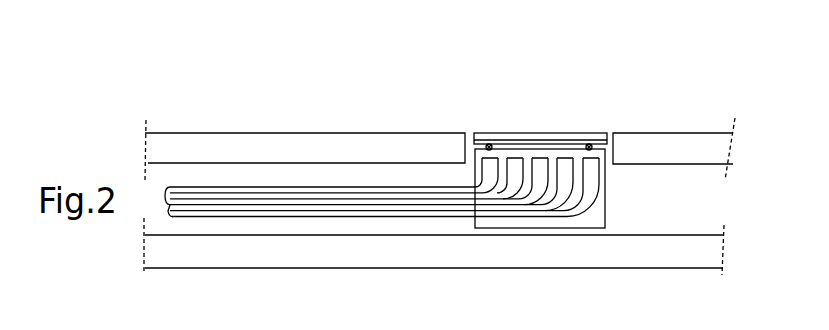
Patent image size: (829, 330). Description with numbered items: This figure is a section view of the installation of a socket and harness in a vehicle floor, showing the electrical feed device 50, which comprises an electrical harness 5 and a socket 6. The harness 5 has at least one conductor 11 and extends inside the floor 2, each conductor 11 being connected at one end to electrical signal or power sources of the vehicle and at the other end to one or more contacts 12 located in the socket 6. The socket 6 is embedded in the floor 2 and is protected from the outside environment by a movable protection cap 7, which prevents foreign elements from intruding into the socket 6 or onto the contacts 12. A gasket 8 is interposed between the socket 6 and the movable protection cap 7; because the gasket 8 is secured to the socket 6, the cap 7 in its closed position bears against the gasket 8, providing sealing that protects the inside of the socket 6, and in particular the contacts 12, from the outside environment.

The floor 2 is at (272, 143).
The electrical harness 5 is at (366, 249).
The socket 6 is at (605, 216).
The movable protection cap 7 is at (541, 140).
The gasket 8 is at (589, 147).
The conductor 11 is at (393, 208).
The contact 12 is at (500, 156).
The electrical feed device 50 is at (567, 103).